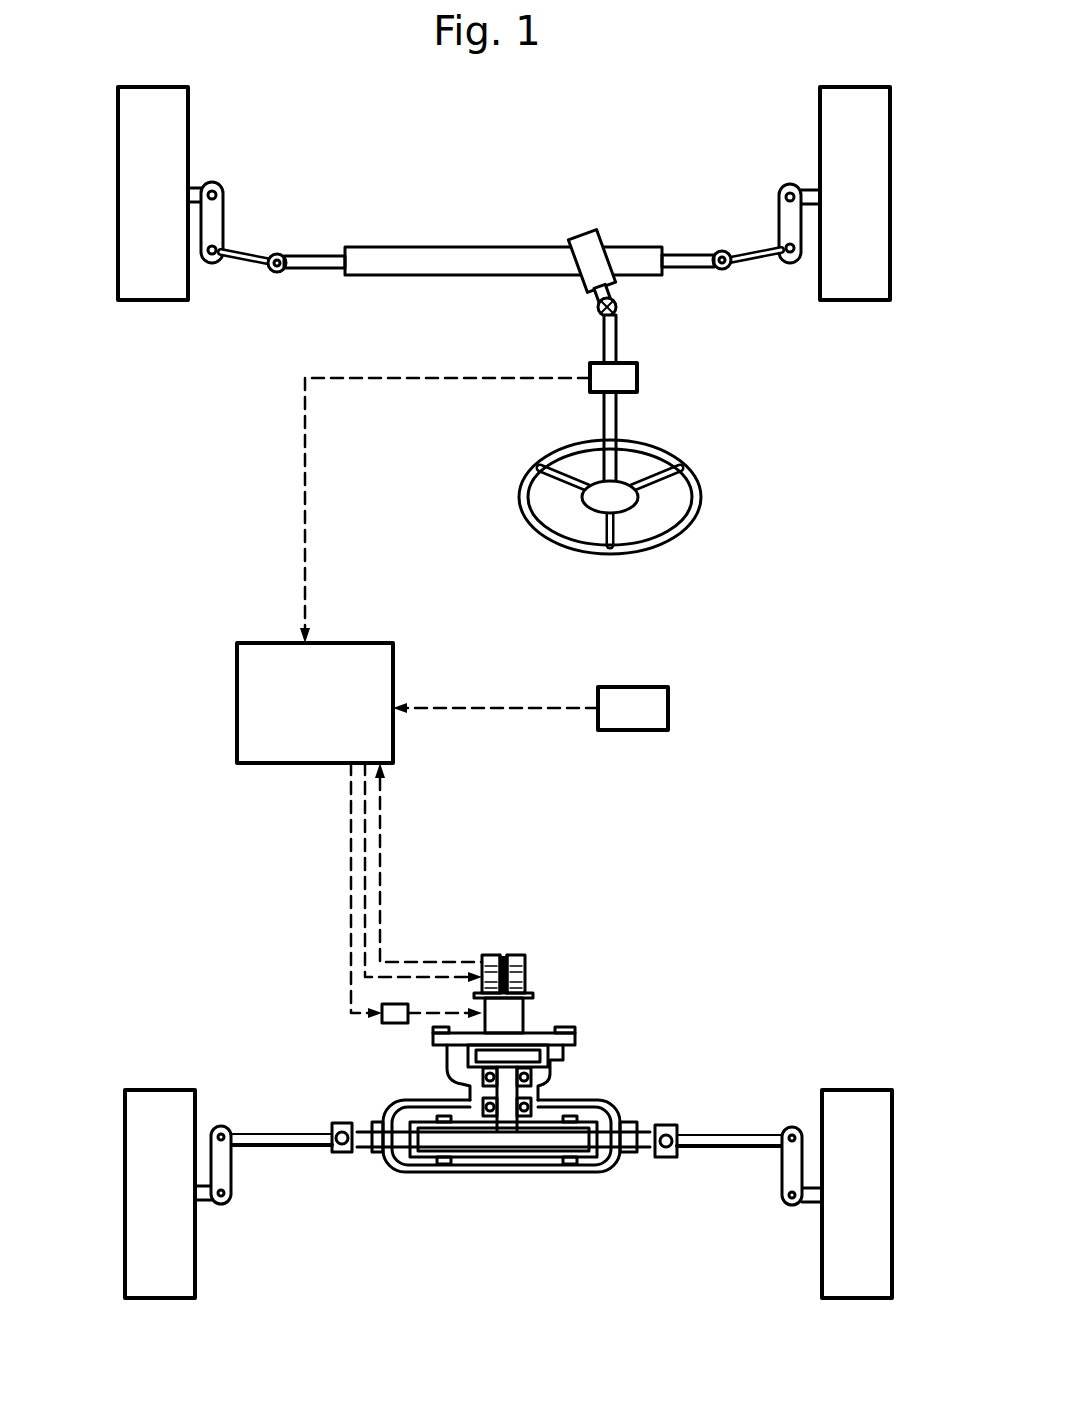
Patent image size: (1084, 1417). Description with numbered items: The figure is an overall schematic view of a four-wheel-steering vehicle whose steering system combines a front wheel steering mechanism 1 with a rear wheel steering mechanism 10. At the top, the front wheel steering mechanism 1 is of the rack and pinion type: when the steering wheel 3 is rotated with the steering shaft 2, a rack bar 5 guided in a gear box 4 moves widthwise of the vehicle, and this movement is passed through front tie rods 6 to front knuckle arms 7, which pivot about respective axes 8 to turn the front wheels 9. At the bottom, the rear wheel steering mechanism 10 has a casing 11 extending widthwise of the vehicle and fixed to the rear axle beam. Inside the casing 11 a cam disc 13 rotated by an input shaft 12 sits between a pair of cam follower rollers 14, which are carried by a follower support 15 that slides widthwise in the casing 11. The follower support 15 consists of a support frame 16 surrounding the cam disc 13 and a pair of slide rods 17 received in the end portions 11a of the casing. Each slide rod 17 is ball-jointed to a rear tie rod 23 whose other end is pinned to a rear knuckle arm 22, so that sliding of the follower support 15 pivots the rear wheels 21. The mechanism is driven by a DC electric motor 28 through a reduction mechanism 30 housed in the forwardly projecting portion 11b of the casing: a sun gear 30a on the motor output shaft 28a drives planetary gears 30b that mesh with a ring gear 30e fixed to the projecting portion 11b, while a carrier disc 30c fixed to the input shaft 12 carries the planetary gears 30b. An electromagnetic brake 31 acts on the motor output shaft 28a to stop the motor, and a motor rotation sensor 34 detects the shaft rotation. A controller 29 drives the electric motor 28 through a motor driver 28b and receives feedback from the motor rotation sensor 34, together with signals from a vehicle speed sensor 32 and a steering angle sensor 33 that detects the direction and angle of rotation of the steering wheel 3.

The front wheel steering mechanism 1 is at (458, 224).
The steering shaft 2 is at (618, 416).
The steering wheel 3 is at (694, 473).
The gear box 4 is at (520, 247).
The rack bar 5 is at (320, 256).
The front tie rods 6 is at (248, 252).
The front knuckle arms 7 is at (232, 190).
The axes 8 is at (214, 190).
The front wheels 9 is at (168, 287).
The rear wheel steering mechanism 10 is at (604, 1088).
The casing 11 is at (407, 1176).
The end portions of the casing 11a is at (377, 1160).
The forwardly projecting portion of the casing 11b is at (584, 1033).
The input shaft 12 is at (470, 1090).
The cam disc 13 is at (490, 1160).
The cam follower rollers 14 is at (446, 1168).
The follower support 15 is at (598, 1165).
The support frame 16 is at (548, 1165).
The slide rods 17 is at (346, 1122).
The rear wheels 21 is at (172, 1288).
The rear knuckle arms 22 is at (235, 1178).
The rear tie rods 23 is at (292, 1147).
The DC electric motor 28 is at (492, 1008).
The motor output shaft 28a is at (505, 956).
The motor driver 28b is at (380, 1014).
The controller 29 is at (382, 642).
The reduction mechanism 30 is at (551, 1052).
The sun gear 30a is at (528, 1030).
The planetary gears 30b is at (442, 1040).
The carrier disc 30c is at (560, 1066).
The ring gear 30e is at (519, 1058).
The electromagnetic brake 31 is at (527, 972).
The vehicle speed sensor 32 is at (670, 708).
The steering angle sensor 33 is at (638, 378).
The motor rotation sensor 34 is at (488, 957).